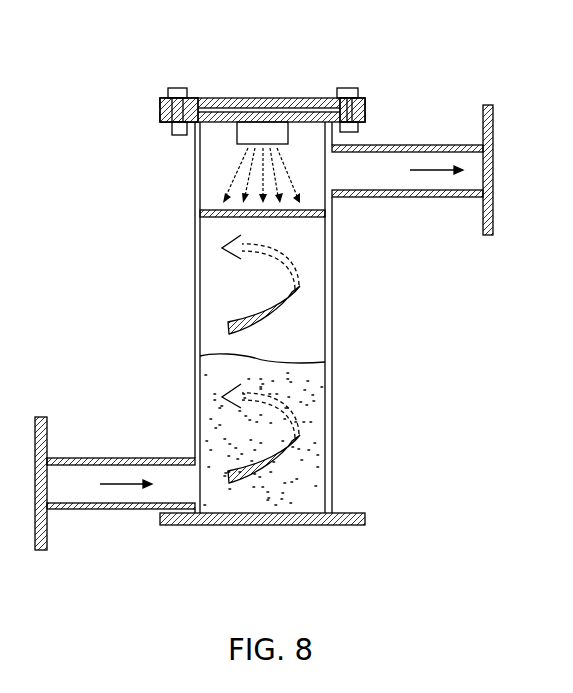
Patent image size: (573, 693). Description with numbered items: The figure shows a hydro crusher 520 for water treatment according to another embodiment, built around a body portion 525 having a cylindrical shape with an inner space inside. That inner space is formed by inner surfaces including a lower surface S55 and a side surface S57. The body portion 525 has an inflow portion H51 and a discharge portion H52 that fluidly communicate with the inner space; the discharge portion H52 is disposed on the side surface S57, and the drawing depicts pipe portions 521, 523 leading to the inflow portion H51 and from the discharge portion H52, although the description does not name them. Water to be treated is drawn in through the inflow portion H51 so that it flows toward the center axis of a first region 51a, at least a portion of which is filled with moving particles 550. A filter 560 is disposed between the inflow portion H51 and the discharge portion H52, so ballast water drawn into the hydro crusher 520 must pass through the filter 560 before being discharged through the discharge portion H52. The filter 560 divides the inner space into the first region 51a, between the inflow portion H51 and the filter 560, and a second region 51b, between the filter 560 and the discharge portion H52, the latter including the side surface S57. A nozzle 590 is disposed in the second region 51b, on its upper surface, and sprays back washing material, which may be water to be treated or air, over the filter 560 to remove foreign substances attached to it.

The hydro crusher 520 is at (273, 65).
The discharge portion H52 is at (330, 165).
The outlet pipe 523 is at (415, 145).
The nozzle 590 is at (237, 131).
The second region 51b is at (224, 170).
The filter 560 is at (213, 215).
The side surface S57 is at (318, 227).
The body portion 525 is at (333, 277).
The first region 51a is at (298, 308).
The inlet pipe 521 is at (80, 457).
The inflow portion H51 is at (197, 483).
The moving particles 550 is at (300, 458).
The lower surface S55 is at (305, 511).